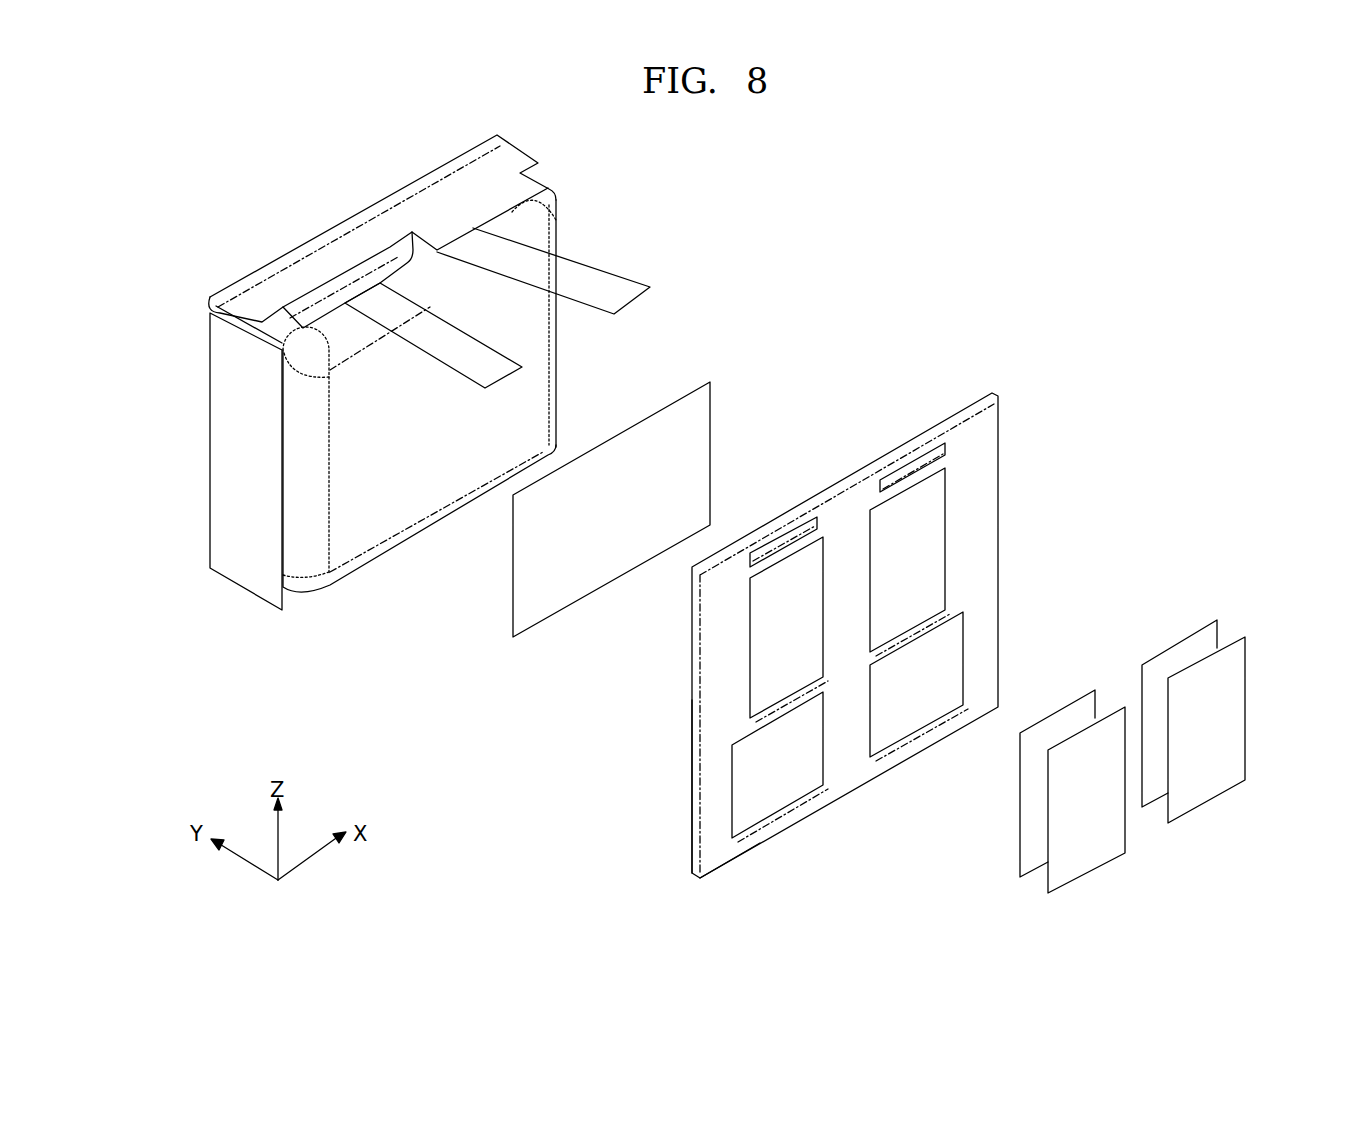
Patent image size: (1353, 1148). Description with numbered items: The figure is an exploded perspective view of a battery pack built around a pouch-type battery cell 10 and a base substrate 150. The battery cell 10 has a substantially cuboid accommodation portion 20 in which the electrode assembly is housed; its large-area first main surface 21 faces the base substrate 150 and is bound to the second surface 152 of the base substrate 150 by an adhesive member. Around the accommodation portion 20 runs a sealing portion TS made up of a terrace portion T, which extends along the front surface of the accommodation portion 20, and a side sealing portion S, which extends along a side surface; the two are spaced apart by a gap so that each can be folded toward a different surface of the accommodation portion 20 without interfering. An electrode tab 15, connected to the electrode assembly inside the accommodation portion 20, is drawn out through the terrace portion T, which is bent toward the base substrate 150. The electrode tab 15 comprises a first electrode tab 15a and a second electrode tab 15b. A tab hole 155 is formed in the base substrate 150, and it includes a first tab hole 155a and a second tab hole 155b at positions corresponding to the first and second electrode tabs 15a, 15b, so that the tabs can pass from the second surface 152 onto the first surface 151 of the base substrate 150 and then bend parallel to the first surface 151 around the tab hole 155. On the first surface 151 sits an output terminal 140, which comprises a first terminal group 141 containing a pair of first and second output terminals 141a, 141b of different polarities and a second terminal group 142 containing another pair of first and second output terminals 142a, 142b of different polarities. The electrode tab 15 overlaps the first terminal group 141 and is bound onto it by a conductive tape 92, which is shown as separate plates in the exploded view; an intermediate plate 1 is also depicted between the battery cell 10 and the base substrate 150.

The battery cell 10 is at (174, 593).
The accommodation portion 20 is at (441, 376).
The first main surface 21 is at (370, 520).
The sealing portion TS is at (141, 270).
The terrace portion T is at (257, 302).
The side sealing portion S is at (232, 358).
The electrode tab 15 is at (744, 200).
The first electrode tab 15a is at (575, 265).
The second electrode tab 15b is at (460, 343).
The insulating plate 1 is at (705, 398).
The base substrate 150 is at (692, 733).
The first surface 151 is at (715, 848).
The second surface 152 is at (693, 862).
The tab hole 155 is at (860, 378).
The first tab hole 155a is at (786, 518).
The second tab hole 155b is at (909, 462).
The output terminal 140 is at (971, 595).
The first terminal group 141 is at (1083, 475).
The first output terminal 141a is at (787, 627).
The second output terminal 141b is at (907, 547).
The second terminal group 142 is at (1083, 605).
The first output terminal 142a is at (777, 753).
The second output terminal 142b is at (917, 672).
The conductive tape 92 is at (1217, 627).